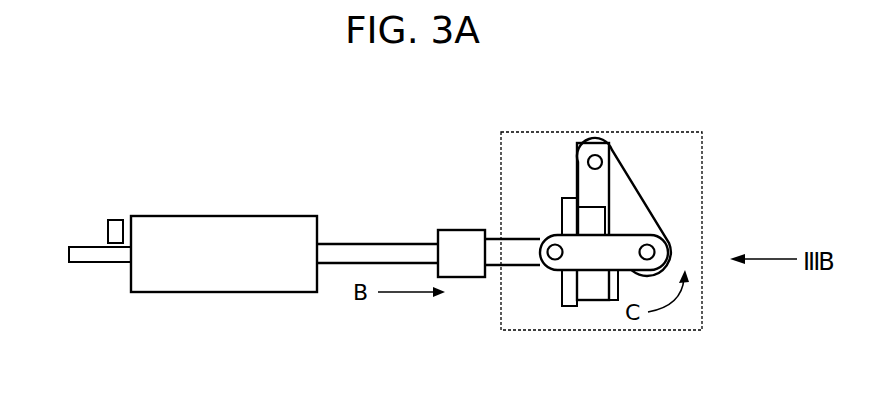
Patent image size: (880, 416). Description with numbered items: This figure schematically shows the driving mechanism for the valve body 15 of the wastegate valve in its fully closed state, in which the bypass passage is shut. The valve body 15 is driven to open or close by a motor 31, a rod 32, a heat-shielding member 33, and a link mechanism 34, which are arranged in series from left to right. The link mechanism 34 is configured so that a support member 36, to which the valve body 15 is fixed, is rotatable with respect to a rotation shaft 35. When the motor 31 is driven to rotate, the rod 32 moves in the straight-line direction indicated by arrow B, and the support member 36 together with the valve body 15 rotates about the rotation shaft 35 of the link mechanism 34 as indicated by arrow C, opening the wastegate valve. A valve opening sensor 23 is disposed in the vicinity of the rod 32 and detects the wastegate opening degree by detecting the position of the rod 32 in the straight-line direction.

The valve body 15 is at (567, 307).
The valve opening sensor 23 is at (108, 228).
The motor 31 is at (192, 216).
The rod 32 is at (355, 243).
The heat-shielding member 33 is at (463, 230).
The link mechanism 34 is at (702, 189).
The rotation shaft 35 is at (588, 162).
The support member 36 is at (602, 300).